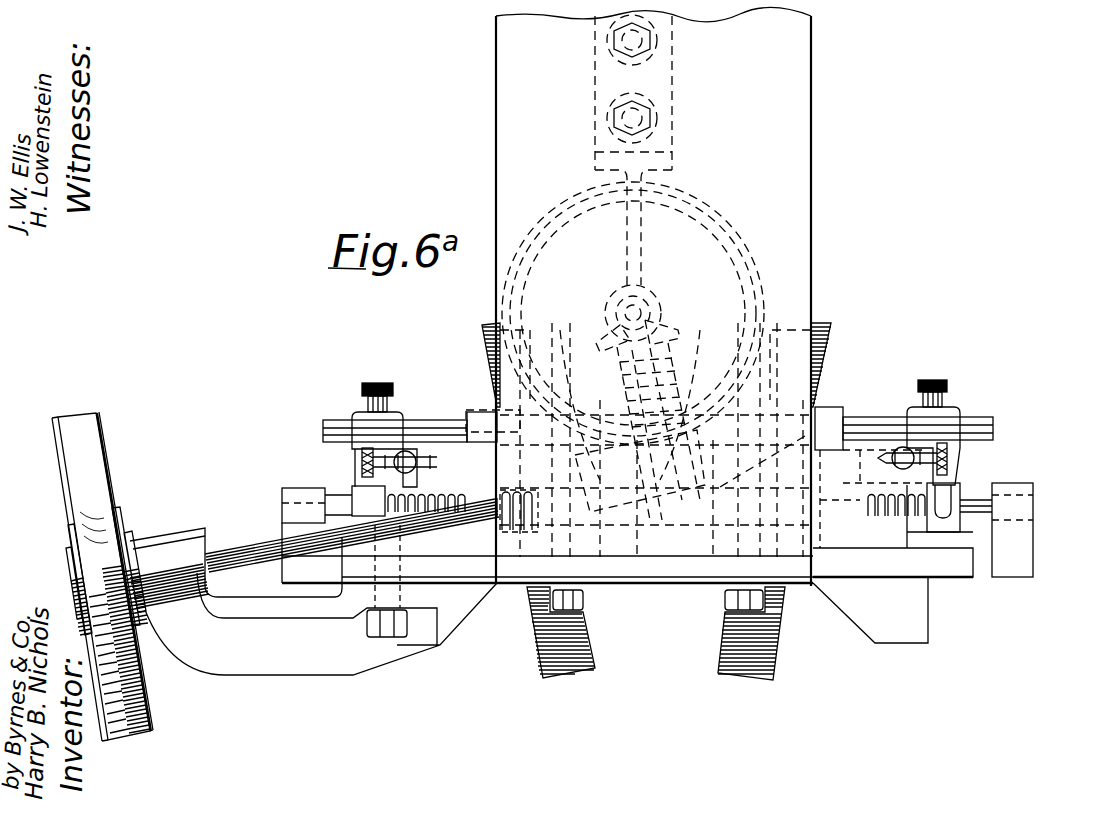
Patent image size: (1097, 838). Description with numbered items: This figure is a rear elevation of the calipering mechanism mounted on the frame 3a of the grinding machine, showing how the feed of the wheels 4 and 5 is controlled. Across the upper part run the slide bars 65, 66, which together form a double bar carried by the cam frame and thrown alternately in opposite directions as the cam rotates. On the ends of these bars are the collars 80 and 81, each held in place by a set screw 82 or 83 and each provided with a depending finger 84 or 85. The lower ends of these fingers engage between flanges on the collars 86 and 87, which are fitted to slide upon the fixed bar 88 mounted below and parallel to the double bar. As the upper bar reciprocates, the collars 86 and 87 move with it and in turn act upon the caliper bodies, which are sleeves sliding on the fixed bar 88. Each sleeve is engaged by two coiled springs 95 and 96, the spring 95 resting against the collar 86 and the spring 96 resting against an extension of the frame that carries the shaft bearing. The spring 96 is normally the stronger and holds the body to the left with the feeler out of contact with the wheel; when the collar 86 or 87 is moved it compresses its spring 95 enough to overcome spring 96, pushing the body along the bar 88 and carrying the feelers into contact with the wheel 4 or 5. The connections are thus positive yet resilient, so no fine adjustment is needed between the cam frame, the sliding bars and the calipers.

The frame 3a is at (813, 108).
The wheel 4 is at (720, 646).
The wheel 5 is at (588, 630).
The slide bar 65 is at (871, 418).
The slide bar 66 is at (430, 420).
The collar 80 is at (948, 418).
The collar 81 is at (372, 430).
The set screw 82 is at (930, 380).
The set screw 83 is at (379, 383).
The depending finger 84 is at (960, 455).
The depending finger 85 is at (362, 462).
The collar 86 is at (962, 485).
The collar 87 is at (365, 495).
The fixed bar 88 is at (282, 492).
The coiled spring 95 is at (440, 484).
The coiled spring 96 is at (512, 535).